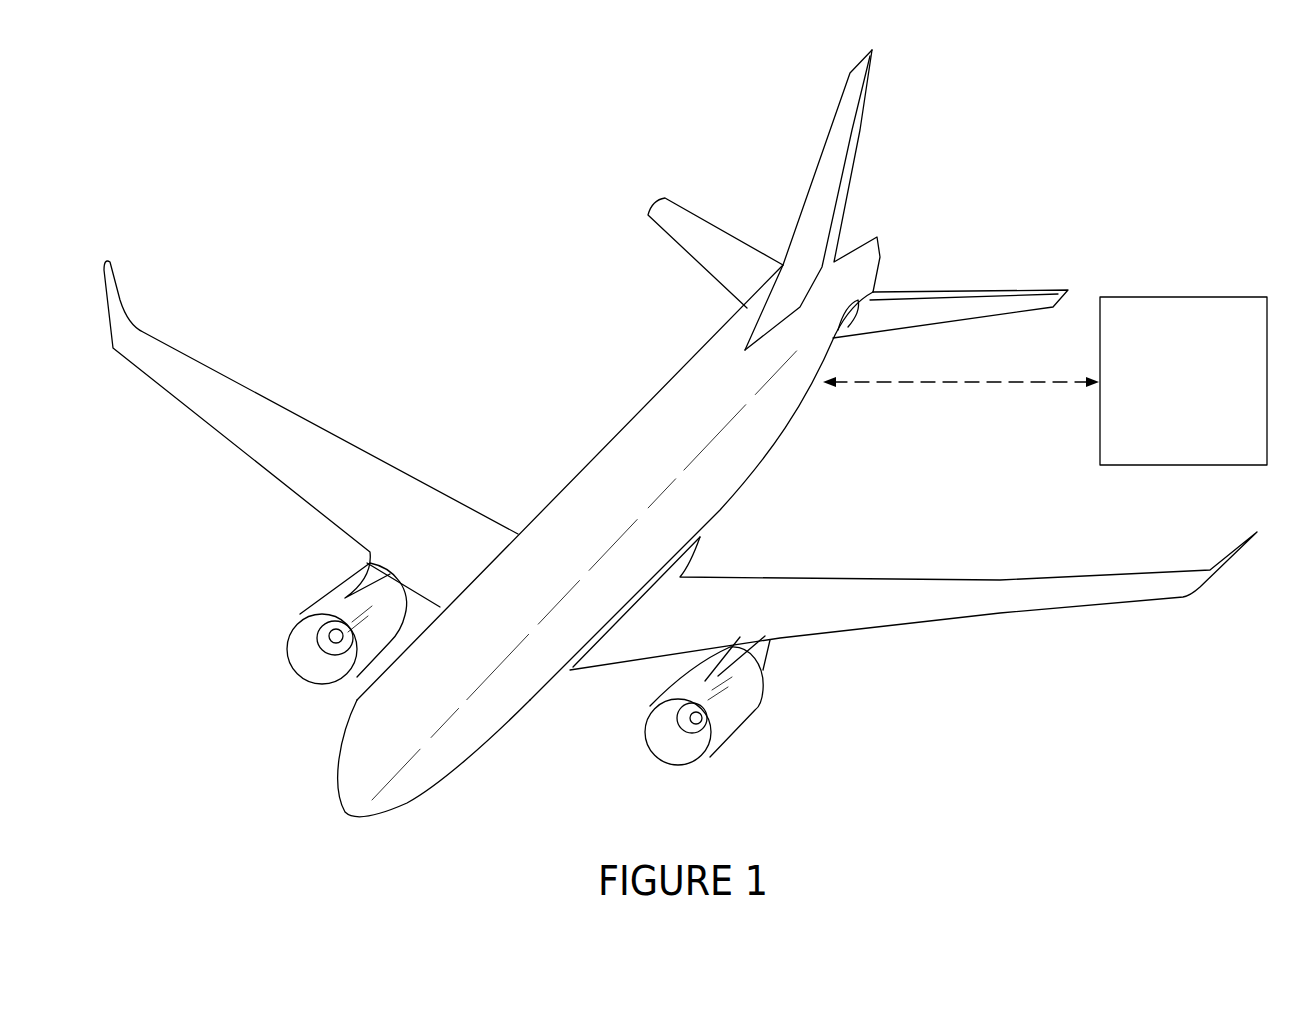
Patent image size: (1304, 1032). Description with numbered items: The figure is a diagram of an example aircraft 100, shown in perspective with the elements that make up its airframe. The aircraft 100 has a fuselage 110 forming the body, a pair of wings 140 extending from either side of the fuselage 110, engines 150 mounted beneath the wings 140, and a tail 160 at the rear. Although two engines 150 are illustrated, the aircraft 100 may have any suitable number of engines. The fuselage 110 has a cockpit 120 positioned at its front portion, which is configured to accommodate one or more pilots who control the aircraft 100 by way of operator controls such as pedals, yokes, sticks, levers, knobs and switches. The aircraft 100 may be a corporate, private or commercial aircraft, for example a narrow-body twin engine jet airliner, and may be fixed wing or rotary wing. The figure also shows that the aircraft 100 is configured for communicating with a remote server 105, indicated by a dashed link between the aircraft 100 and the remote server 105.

The aircraft 100 is at (165, 166).
The remote server 105 is at (1158, 439).
The fuselage 110 is at (752, 455).
The cockpit 120 is at (337, 815).
The wings 140 is at (337, 453).
The engines 150 is at (313, 598).
The tail 160 is at (840, 192).